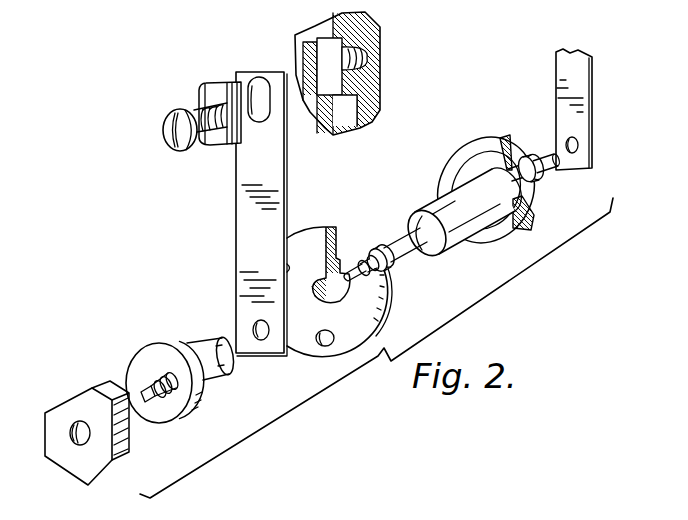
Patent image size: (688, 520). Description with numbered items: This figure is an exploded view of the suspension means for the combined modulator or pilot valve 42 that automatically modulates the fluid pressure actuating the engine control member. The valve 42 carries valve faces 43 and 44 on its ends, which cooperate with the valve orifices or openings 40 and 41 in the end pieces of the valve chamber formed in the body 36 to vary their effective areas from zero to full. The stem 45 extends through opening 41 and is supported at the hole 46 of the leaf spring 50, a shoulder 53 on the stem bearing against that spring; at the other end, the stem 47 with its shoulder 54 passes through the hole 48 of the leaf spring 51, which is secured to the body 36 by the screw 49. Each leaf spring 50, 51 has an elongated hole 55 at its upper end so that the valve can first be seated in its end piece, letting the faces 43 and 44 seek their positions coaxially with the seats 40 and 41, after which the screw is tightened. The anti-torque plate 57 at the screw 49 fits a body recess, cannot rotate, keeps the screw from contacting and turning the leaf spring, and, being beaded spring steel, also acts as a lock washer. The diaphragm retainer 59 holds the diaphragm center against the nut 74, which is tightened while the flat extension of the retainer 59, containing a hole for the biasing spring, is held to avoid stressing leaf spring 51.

The body 36 is at (378, 24).
The valve orifice 40 is at (330, 302).
The valve orifice 41 is at (513, 172).
The modulator or pilot valve 42 is at (450, 198).
The valve face 43 is at (418, 227).
The valve face 44 is at (489, 156).
The stem 45 is at (528, 192).
The hole 46 is at (580, 145).
The stem 47 is at (400, 258).
The hole 48 is at (261, 340).
The screw 49 is at (164, 131).
The leaf spring 50 is at (565, 72).
The leaf spring 51 is at (243, 217).
The shoulder 53 is at (545, 177).
The shoulder 54 is at (390, 270).
The elongated hole 55 is at (265, 108).
The anti-torque plate 57 is at (204, 83).
The diaphragm retainer 59 is at (168, 330).
The nut 74 is at (62, 408).